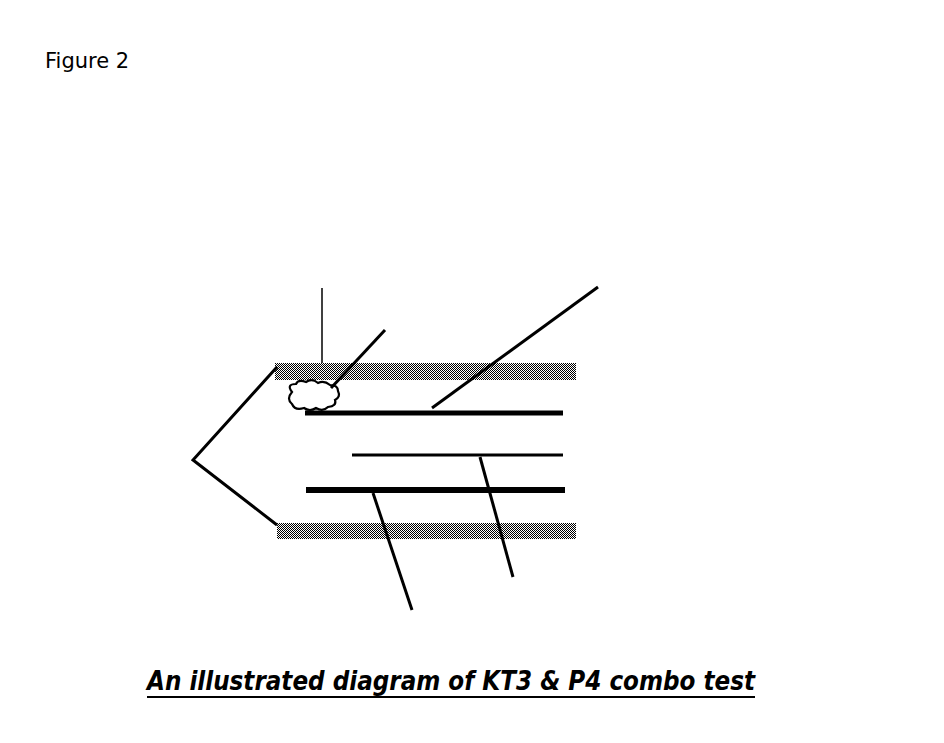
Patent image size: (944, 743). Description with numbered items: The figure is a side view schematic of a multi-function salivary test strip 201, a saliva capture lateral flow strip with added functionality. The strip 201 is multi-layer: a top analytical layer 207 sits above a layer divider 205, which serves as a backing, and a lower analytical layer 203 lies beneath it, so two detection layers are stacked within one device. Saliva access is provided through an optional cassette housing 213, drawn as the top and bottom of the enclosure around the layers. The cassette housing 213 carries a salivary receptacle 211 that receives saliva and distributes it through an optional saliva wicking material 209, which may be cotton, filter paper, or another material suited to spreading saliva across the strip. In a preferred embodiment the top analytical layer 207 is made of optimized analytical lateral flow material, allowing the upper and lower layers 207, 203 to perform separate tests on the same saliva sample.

The multi-function salivary test strip 201 is at (290, 457).
The lower analytical layer 203 is at (565, 490).
The layer divider 205 is at (557, 455).
The top analytical layer 207 is at (516, 413).
The saliva wicking material 209 is at (329, 392).
The salivary receptacle 211 is at (278, 367).
The cassette housing 213 is at (287, 527).